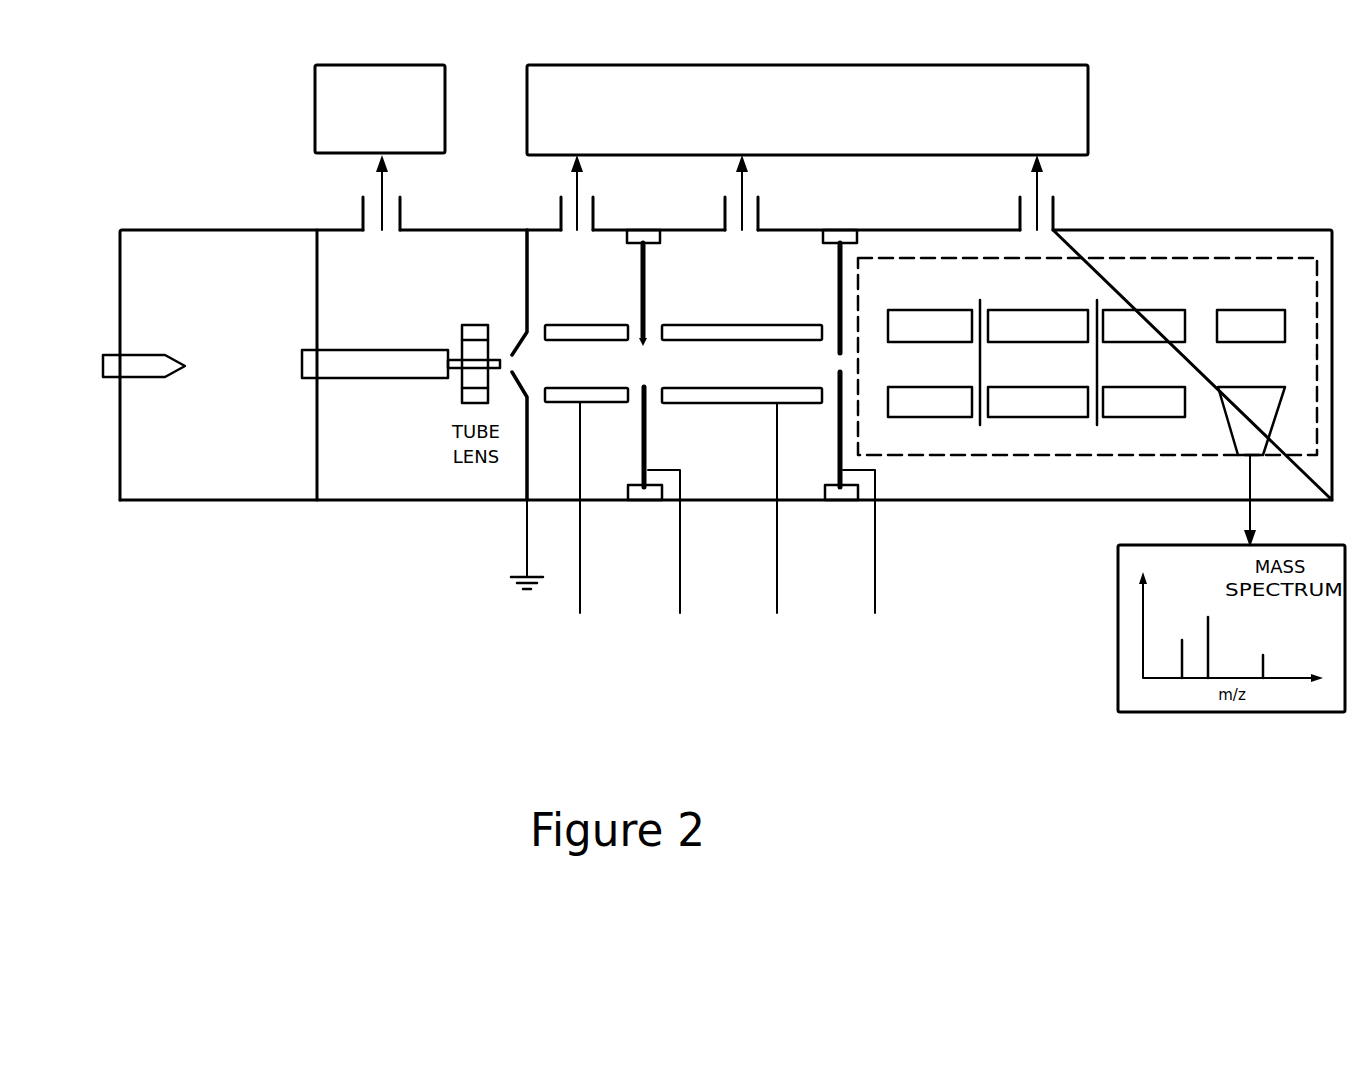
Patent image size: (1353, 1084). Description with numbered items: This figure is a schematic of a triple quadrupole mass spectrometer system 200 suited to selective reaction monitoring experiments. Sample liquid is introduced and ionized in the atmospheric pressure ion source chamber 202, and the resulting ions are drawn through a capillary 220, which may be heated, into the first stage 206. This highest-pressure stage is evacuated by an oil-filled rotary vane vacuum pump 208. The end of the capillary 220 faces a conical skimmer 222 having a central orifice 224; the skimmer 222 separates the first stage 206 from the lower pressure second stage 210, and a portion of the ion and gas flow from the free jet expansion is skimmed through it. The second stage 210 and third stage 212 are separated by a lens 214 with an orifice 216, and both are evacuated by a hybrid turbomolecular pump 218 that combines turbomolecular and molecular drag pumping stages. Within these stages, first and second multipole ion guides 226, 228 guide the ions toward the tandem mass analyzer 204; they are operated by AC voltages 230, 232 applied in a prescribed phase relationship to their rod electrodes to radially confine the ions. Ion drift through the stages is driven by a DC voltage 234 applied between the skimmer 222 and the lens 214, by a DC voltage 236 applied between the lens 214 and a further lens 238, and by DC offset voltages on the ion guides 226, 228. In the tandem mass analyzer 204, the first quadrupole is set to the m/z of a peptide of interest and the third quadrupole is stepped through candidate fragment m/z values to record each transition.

The triple quadrupole mass spectrometer system 200 is at (925, 684).
The atmospheric pressure ion source chamber 202 is at (217, 470).
The tandem mass analyzer 204 is at (1013, 472).
The first stage 206 is at (368, 485).
The oil-filled rotary vane vacuum pump 208 is at (313, 130).
The second stage 210 is at (607, 243).
The third stage 212 is at (778, 247).
The lens 214 is at (640, 460).
The orifice 216 is at (652, 366).
The hybrid turbomolecular pump 218 is at (1090, 118).
The capillary 220 is at (385, 378).
The conical skimmer 222 is at (527, 480).
The central orifice 224 is at (511, 363).
The first multipole ion guide 226 is at (588, 330).
The second multipole ion guide 228 is at (747, 332).
The AC voltage 230 is at (583, 605).
The AC voltage 232 is at (783, 605).
The DC voltage 234 is at (683, 605).
The DC voltage 236 is at (878, 605).
The lens 238 is at (837, 453).